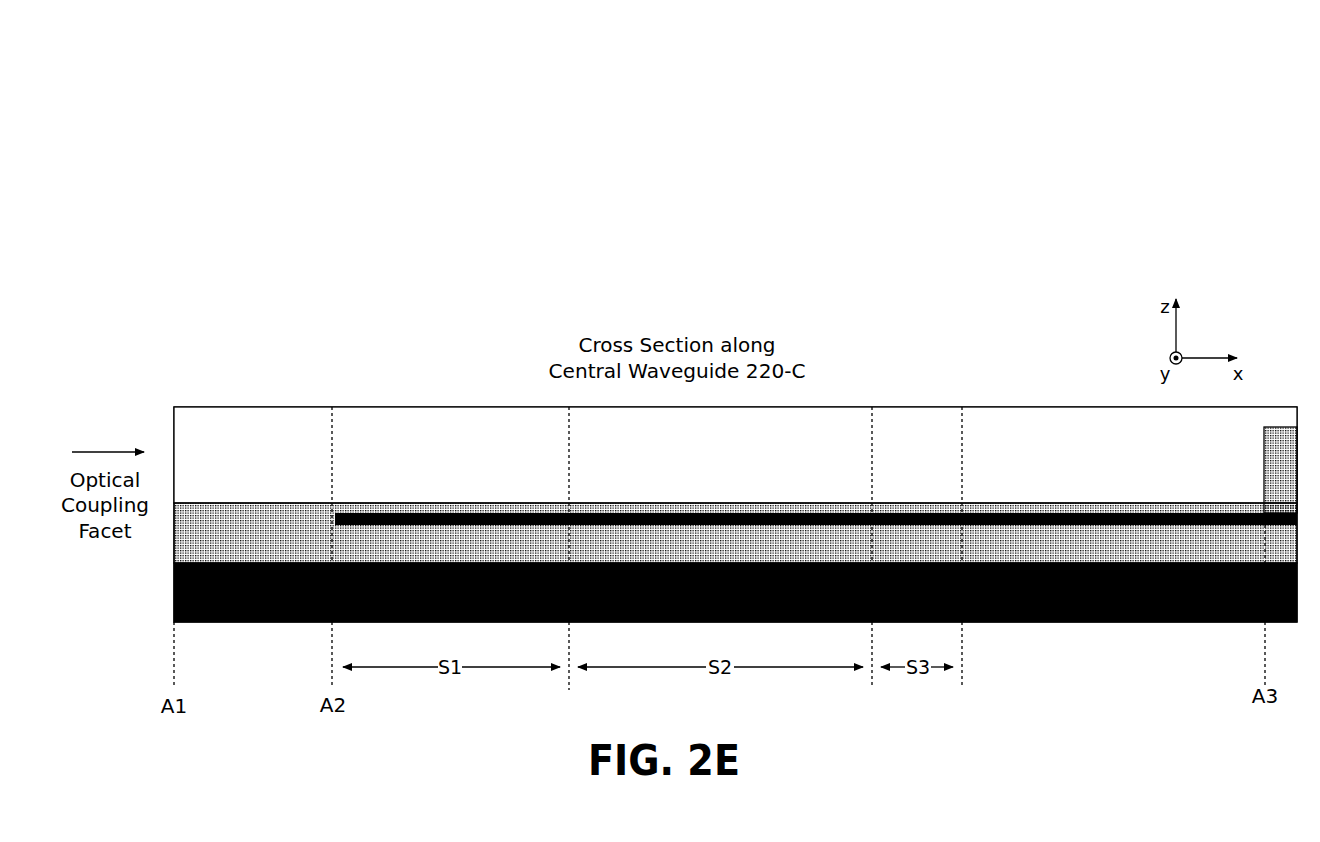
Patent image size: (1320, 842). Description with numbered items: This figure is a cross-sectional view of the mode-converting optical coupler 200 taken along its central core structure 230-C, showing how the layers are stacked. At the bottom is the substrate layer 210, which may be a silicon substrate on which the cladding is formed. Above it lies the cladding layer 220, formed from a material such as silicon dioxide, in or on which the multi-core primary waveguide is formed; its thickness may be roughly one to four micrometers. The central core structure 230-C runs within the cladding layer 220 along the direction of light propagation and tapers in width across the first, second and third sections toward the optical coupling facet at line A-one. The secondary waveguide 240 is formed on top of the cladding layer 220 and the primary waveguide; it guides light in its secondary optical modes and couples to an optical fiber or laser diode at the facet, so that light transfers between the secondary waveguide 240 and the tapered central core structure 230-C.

The mode-converting optical coupler 200 is at (686, 357).
The substrate layer 210 is at (229, 609).
The cladding layer 220 is at (229, 542).
The central core structure 230-C is at (710, 513).
The secondary waveguide 240 is at (229, 439).